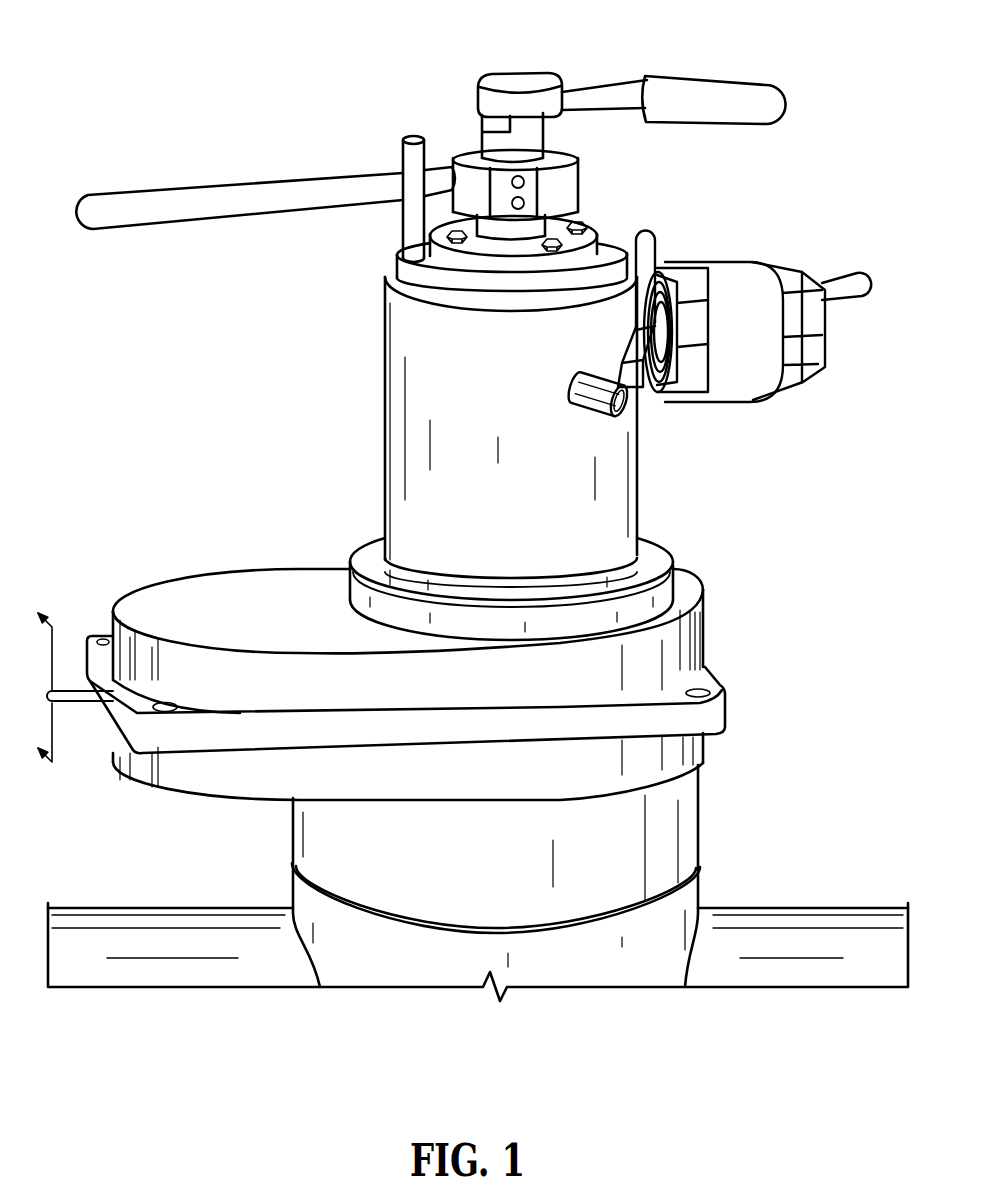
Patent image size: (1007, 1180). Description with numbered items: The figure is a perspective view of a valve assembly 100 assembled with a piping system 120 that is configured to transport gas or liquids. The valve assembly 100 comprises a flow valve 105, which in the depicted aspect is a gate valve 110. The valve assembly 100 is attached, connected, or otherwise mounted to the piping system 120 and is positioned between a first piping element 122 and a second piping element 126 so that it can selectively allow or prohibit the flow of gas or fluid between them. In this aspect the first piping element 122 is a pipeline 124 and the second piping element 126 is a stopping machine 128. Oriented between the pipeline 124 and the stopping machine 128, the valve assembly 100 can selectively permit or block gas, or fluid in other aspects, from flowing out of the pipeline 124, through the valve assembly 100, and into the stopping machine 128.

The valve assembly 100 is at (98, 587).
The flow valve 105 is at (155, 548).
The gate valve 110 is at (750, 637).
The piping system 120 is at (155, 87).
The first piping element 122 is at (876, 882).
The pipeline 124 is at (797, 945).
The second piping element 126 is at (318, 364).
The stopping machine 128 is at (452, 448).